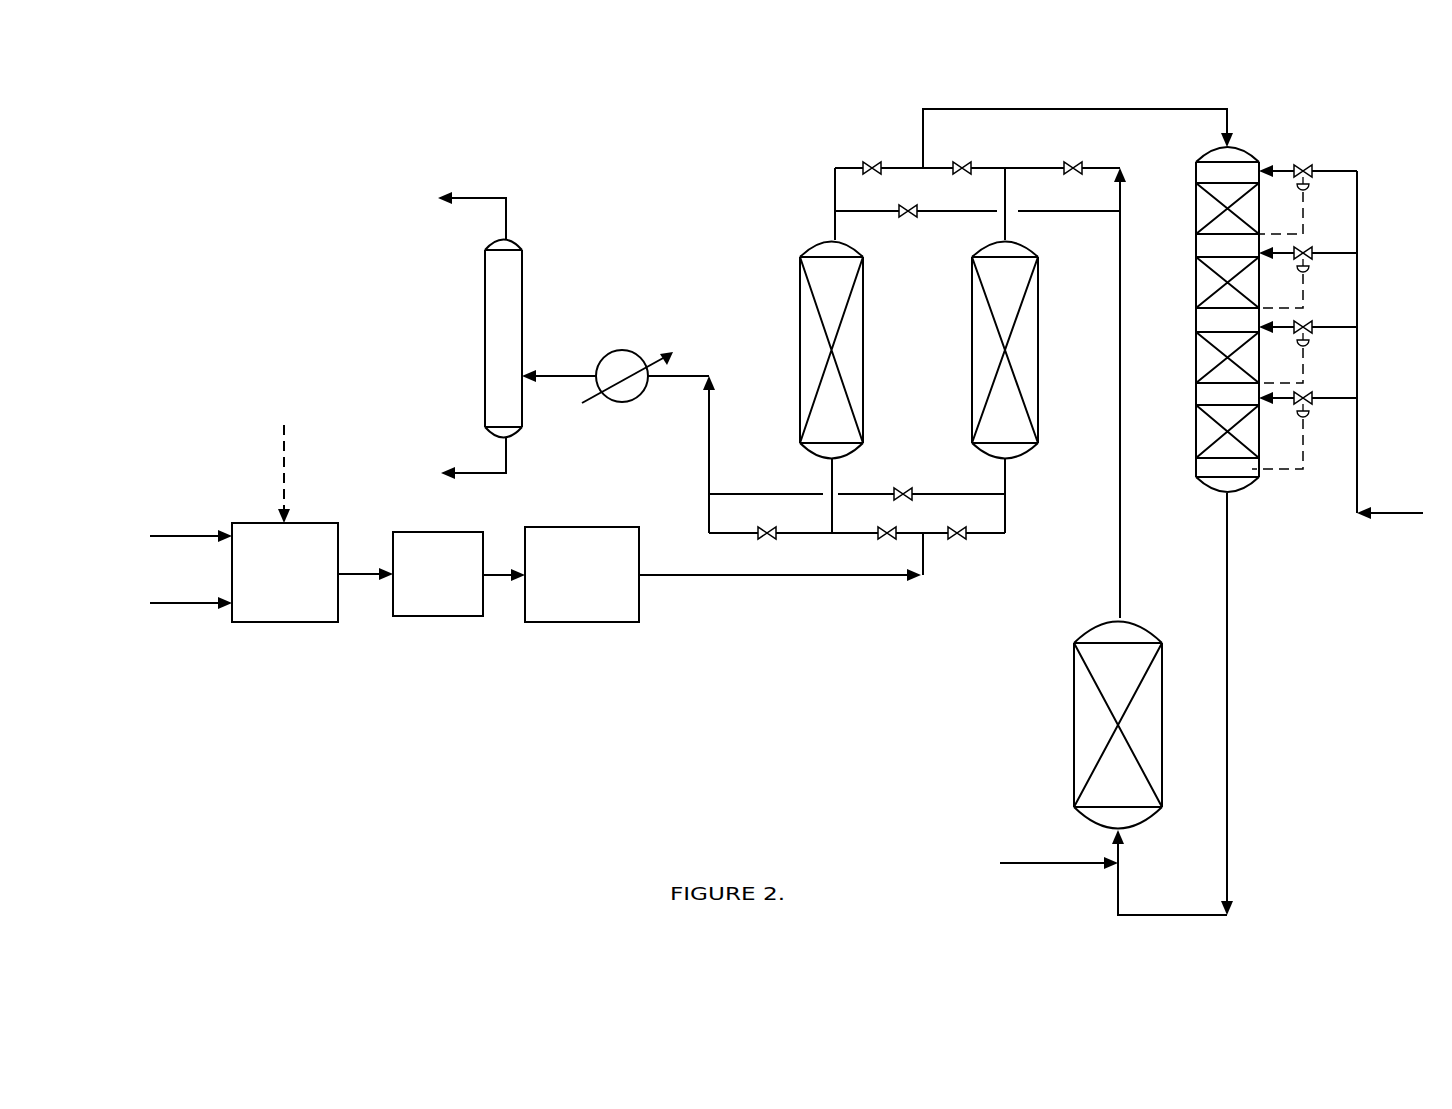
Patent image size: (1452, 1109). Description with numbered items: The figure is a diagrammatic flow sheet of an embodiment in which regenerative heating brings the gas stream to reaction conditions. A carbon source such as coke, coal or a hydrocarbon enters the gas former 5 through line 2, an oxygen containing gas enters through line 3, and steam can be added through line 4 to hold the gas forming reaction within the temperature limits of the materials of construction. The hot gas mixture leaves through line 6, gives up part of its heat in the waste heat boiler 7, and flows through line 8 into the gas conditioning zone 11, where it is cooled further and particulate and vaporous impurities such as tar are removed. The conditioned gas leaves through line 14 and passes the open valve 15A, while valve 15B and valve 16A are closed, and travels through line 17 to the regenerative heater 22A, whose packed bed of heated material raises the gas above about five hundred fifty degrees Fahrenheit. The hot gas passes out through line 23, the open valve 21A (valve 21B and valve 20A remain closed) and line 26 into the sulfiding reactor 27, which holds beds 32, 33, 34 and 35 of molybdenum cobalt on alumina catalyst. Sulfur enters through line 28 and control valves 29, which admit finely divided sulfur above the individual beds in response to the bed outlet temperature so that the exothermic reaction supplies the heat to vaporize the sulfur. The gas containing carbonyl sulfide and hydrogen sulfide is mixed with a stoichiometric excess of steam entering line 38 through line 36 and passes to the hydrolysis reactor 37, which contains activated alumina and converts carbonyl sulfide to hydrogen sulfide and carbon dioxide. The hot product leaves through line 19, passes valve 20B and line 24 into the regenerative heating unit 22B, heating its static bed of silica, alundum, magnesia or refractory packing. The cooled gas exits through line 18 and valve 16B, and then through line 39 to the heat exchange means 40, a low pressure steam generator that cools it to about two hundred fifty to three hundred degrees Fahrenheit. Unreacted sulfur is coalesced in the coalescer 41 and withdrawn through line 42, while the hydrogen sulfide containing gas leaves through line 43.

The line 2 is at (180, 537).
The line 3 is at (176, 602).
The line 4 is at (285, 460).
The gas former 5 is at (308, 623).
The line 6 is at (370, 576).
The waste heat boiler 7 is at (440, 617).
The line 8 is at (504, 577).
The gas conditioning zone 11 is at (580, 623).
The line 14 is at (820, 577).
The valve 15A is at (886, 540).
The valve 15B is at (958, 540).
The valve 16A is at (770, 540).
The valve 16B is at (906, 486).
The line 17 is at (838, 478).
The line 18 is at (1012, 484).
The line 19 is at (1118, 530).
The valve 20A is at (908, 218).
The valve 20B is at (1079, 138).
The valve 21A is at (875, 160).
The valve 21B is at (963, 160).
The regenerative heater 22A is at (863, 366).
The regenerative heating unit 22B is at (1038, 366).
The line 23 is at (835, 196).
The line 24 is at (1010, 168).
The line 26 is at (1122, 108).
The sulfiding reactor 27 is at (1252, 152).
The line 28 is at (1390, 510).
The control valves 29 is at (1306, 163).
The bed 32 is at (1198, 220).
The bed 33 is at (1198, 302).
The bed 34 is at (1198, 368).
The bed 35 is at (1198, 442).
The line 36 is at (1028, 866).
The hydrolysis reactor 37 is at (1162, 716).
The line 38 is at (1120, 878).
The line 39 is at (709, 455).
The heat exchange means 40 is at (644, 352).
The coalescer 41 is at (522, 322).
The line 42 is at (506, 466).
The line 43 is at (506, 210).